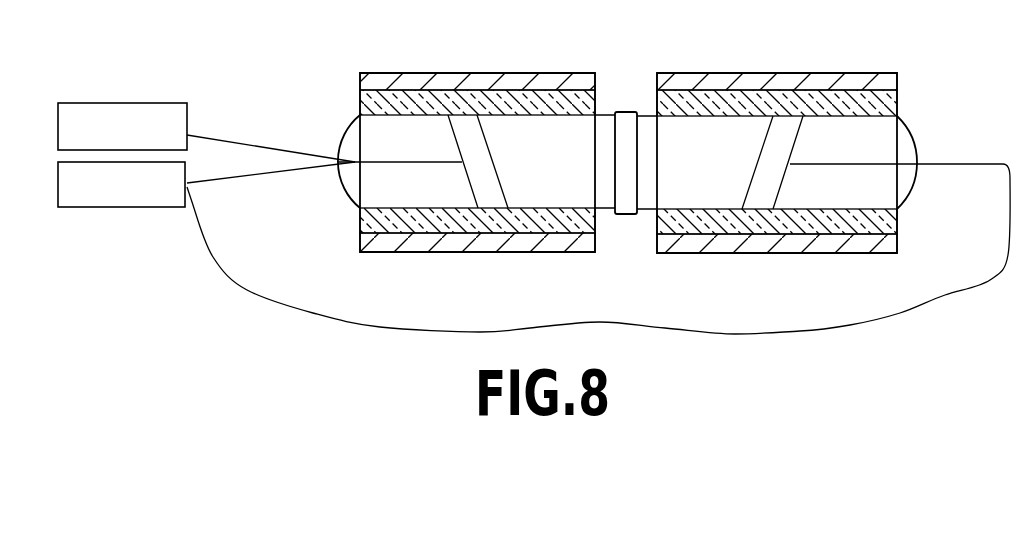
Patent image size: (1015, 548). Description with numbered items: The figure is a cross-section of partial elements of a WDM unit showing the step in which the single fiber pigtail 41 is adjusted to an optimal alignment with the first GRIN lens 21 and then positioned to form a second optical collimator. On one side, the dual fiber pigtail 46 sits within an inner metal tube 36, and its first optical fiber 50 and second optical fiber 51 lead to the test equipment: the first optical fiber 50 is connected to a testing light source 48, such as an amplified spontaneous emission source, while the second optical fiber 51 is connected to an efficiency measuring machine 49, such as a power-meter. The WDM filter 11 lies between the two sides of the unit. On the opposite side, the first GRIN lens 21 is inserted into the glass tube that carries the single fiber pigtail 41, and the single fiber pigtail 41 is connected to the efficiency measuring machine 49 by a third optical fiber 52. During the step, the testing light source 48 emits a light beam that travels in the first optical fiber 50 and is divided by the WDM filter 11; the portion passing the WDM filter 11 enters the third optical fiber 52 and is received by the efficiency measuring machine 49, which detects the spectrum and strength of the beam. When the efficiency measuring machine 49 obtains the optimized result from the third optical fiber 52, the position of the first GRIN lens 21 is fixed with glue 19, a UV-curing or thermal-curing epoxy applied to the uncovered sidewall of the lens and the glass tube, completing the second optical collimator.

The WDM filter 11 is at (625, 112).
The glue 19 is at (645, 214).
The first GRIN lens 21 is at (647, 115).
The inner metal tube 36 is at (477, 243).
The single fiber pigtail 41 is at (800, 128).
The dual fiber pigtail 46 is at (455, 128).
The testing light source 48 is at (152, 103).
The efficiency measuring machine 49 is at (132, 207).
The first optical fiber 50 is at (257, 143).
The second optical fiber 51 is at (258, 177).
The third optical fiber 52 is at (962, 162).